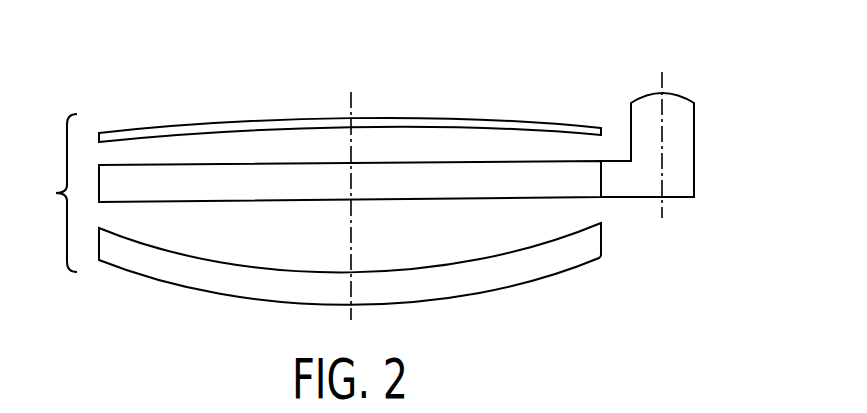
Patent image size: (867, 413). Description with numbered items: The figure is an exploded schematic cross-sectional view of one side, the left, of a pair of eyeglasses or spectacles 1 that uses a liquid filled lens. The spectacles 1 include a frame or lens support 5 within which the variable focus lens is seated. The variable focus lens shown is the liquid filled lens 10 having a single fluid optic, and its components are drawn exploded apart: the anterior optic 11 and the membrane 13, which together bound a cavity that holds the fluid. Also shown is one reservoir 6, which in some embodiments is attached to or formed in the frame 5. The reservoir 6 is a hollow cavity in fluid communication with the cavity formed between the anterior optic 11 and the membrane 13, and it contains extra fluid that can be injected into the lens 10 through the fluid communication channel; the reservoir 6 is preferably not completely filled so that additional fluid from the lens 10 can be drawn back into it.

The spectacles 1 is at (206, 86).
The frame 5 is at (553, 177).
The reservoir 6 is at (695, 128).
The liquid filled lens 10 is at (52, 193).
The anterior optic 11 is at (573, 250).
The membrane 13 is at (553, 124).